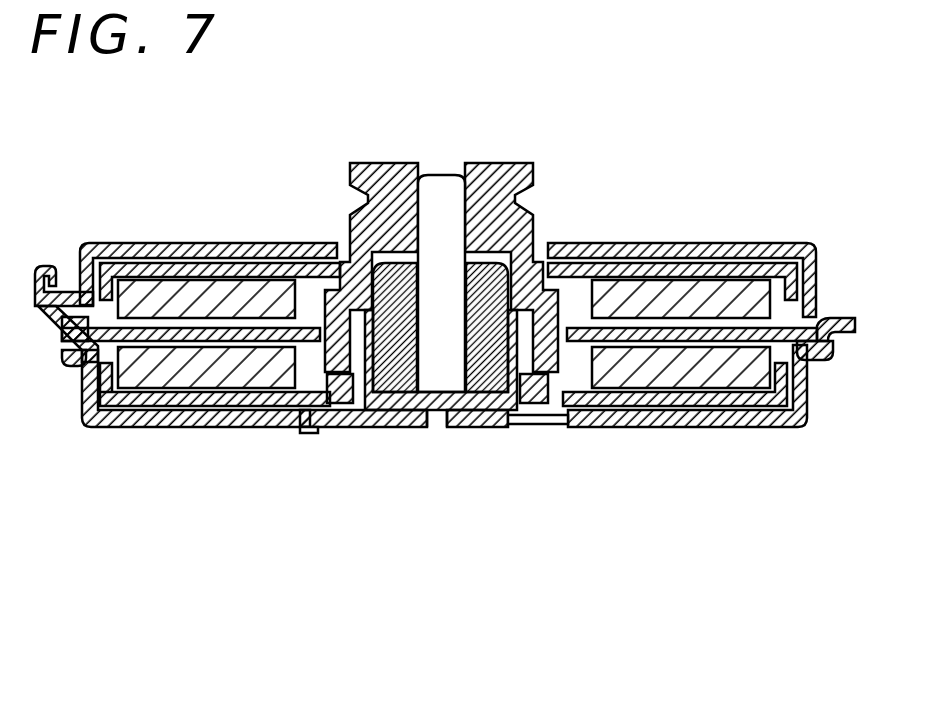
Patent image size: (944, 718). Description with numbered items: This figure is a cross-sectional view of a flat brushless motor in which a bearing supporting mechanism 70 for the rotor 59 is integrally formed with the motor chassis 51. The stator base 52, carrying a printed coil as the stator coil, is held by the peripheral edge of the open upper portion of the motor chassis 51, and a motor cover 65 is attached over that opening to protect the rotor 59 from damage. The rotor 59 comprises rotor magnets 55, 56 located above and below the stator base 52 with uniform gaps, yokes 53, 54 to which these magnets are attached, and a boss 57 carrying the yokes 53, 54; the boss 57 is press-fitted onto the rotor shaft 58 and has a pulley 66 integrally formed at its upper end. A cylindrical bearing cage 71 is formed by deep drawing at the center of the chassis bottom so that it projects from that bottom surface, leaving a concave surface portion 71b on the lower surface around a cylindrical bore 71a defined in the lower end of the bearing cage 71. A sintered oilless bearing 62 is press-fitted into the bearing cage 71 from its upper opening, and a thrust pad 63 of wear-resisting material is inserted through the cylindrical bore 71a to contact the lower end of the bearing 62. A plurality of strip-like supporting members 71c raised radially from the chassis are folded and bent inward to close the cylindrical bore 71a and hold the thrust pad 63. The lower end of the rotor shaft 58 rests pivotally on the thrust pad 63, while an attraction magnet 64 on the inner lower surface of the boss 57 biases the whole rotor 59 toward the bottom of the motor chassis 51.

The motor chassis 51 is at (107, 428).
The stator base 52 is at (731, 333).
The yoke 53 is at (663, 266).
The yoke 54 is at (745, 398).
The rotor magnet 55 is at (173, 282).
The rotor magnet 56 is at (180, 378).
The boss 57 is at (497, 197).
The rotor shaft 58 is at (440, 175).
The rotor 59 is at (108, 243).
The sintered oilless bearing 62 is at (403, 402).
The thrust pad 63 is at (383, 410).
The attraction magnet 64 is at (337, 410).
The motor cover 65 is at (223, 262).
The pulley 66 is at (351, 187).
The bearing supporting mechanism 70 is at (526, 316).
The bearing cage 71 is at (343, 402).
The cylindrical bore 71a is at (492, 410).
The concave surface portion 71b is at (318, 420).
The supporting members 71c is at (427, 402).